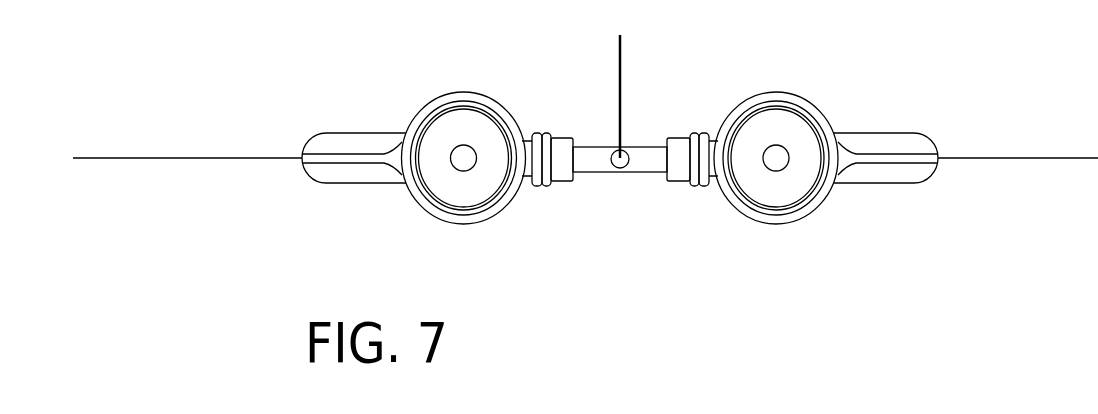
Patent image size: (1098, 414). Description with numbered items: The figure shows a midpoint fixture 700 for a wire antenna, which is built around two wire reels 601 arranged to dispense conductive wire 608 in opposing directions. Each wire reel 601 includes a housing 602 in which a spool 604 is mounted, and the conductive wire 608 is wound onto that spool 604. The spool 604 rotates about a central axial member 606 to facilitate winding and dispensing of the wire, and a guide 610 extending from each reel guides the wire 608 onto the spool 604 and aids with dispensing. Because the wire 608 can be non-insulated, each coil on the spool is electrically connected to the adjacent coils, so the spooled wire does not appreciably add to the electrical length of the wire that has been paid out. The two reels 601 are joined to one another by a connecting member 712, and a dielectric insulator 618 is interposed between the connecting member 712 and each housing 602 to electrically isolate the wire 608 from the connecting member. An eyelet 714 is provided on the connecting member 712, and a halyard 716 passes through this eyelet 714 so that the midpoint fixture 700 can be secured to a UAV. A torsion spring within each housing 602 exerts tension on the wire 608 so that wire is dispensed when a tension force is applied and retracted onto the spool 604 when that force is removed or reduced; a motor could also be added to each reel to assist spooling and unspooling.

The wire reel 601 is at (527, 103).
The housing 602 is at (487, 95).
The spool 604 is at (460, 122).
The central axial member 606 is at (454, 149).
The conductive wire 608 is at (177, 158).
The guide 610 is at (347, 185).
The dielectric insulator 618 is at (565, 140).
The midpoint fixture 700 is at (780, 261).
The connecting member 712 is at (580, 173).
The eyelet 714 is at (618, 169).
The halyard 716 is at (623, 37).